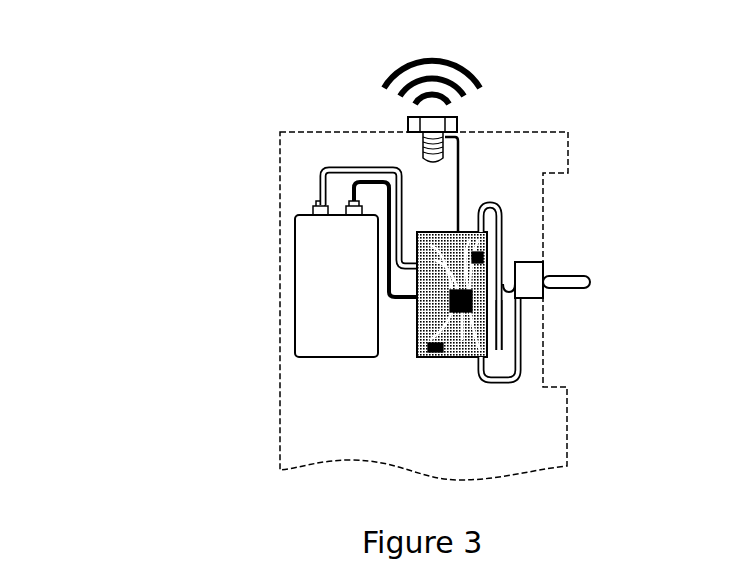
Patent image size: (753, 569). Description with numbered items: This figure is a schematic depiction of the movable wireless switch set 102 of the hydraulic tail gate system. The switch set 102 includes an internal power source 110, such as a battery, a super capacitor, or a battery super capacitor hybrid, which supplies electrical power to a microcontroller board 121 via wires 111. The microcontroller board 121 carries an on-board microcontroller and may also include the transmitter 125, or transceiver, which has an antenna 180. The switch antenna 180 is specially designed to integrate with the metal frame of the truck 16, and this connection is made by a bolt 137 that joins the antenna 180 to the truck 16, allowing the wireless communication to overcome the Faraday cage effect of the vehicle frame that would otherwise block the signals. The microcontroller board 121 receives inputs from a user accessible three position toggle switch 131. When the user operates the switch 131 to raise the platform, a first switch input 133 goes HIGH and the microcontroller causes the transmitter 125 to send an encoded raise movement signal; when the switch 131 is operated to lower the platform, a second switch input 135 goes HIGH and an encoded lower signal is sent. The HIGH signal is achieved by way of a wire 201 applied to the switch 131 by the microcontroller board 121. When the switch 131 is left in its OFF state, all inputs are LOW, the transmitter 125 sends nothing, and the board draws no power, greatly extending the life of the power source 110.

The movable wireless switch set 102 is at (168, 127).
The wires 111 is at (353, 182).
The bolt 137 is at (457, 122).
The antenna 180 is at (460, 160).
The first switch input 133 is at (503, 213).
The transmitter 125 is at (483, 253).
The three position toggle switch 131 is at (530, 280).
The second switch input 135 is at (502, 310).
The wire 201 is at (520, 355).
The internal power source 110 is at (320, 290).
The truck 16 is at (280, 408).
The microcontroller board 121 is at (478, 357).